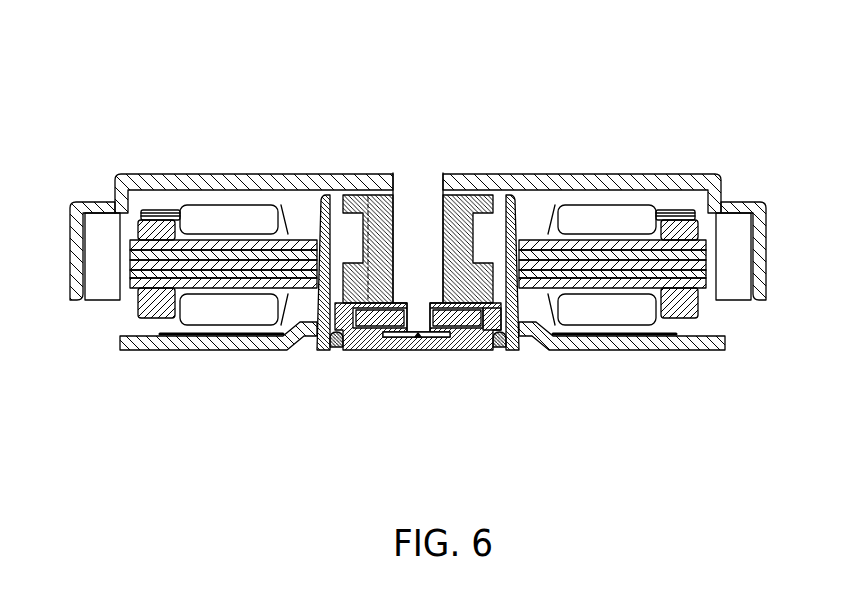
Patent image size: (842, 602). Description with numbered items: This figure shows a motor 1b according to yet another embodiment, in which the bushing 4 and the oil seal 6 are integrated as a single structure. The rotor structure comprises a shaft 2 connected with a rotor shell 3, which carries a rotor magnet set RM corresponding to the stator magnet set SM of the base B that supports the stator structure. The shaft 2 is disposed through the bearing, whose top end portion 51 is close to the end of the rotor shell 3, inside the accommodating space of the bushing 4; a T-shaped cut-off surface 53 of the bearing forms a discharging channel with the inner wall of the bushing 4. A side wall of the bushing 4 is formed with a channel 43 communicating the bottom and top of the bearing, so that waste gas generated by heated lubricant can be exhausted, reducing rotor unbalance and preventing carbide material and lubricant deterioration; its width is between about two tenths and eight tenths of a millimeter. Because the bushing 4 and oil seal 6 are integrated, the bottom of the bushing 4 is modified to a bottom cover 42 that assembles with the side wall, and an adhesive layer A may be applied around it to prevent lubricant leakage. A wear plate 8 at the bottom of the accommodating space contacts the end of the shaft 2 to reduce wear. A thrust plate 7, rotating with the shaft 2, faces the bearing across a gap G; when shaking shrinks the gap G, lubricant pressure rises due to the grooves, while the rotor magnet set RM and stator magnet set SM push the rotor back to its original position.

The motor 1b is at (205, 78).
The rotor shell 3 is at (238, 187).
The rotor magnet set RM is at (106, 222).
The stator magnet set SM is at (592, 222).
The shaft 2 is at (422, 193).
The oil seal 6 is at (370, 197).
The top end portion 51 is at (453, 197).
The channel 43 is at (503, 197).
The thrust plate 7 is at (380, 318).
The gap G is at (487, 322).
The wear plate 8 is at (441, 320).
The bottom cover 42 is at (423, 338).
The adhesive layer A is at (337, 348).
The T-shaped cut-off surface 53 is at (293, 343).
The bushing 4 is at (533, 330).
The base B is at (628, 347).